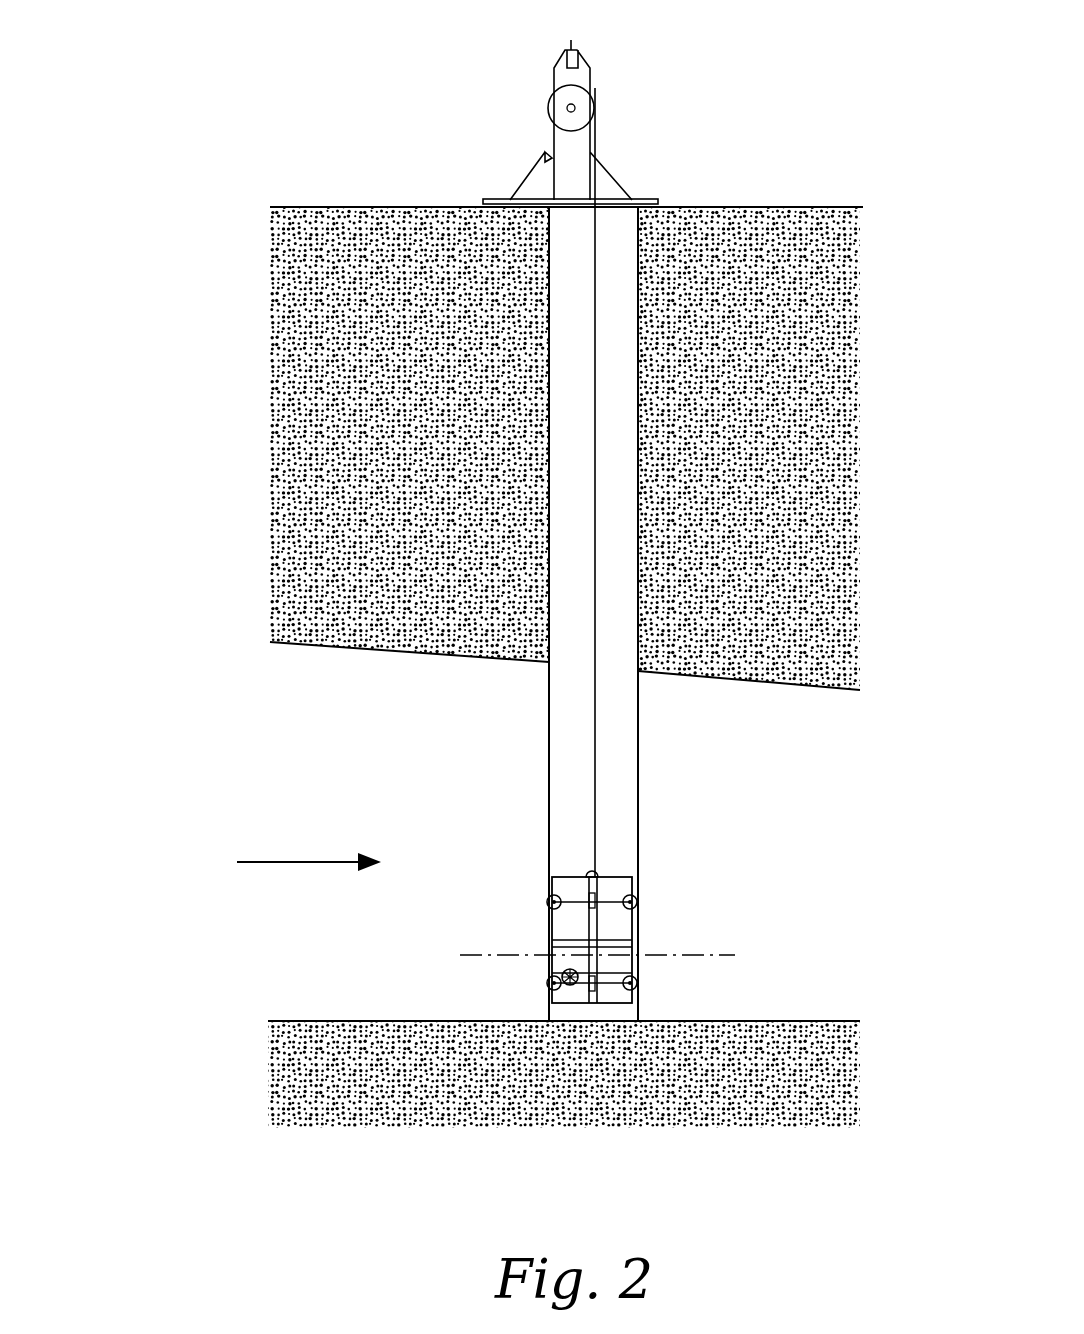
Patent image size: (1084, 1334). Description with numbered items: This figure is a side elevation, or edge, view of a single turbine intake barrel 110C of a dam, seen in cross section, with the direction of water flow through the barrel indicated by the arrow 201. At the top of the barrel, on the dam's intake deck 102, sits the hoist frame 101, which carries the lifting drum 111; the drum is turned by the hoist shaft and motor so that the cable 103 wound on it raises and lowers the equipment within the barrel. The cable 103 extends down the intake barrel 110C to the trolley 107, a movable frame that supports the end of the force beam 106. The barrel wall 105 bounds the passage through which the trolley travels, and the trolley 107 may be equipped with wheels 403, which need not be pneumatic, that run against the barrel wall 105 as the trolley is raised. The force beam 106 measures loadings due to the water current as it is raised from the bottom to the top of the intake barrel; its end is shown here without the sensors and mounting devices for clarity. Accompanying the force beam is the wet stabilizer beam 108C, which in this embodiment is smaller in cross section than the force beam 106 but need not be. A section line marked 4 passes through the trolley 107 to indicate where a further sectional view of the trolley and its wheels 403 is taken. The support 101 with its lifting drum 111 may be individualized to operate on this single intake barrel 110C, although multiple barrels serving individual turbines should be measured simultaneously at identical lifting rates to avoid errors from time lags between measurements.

The hoist frame 101 is at (608, 68).
The lifting drum 111 is at (540, 108).
The intake deck 102 is at (842, 195).
The cable 103 is at (584, 725).
The wellbore 105 is at (640, 728).
The intake barrel 110C is at (368, 800).
The water flow direction arrow 201 is at (320, 866).
The wet stabilizer beam 108C is at (612, 860).
The wheels 403 is at (578, 914).
The trolley 107 is at (648, 925).
The force beam 106 is at (560, 998).
The section line 4- 4 is at (592, 957).